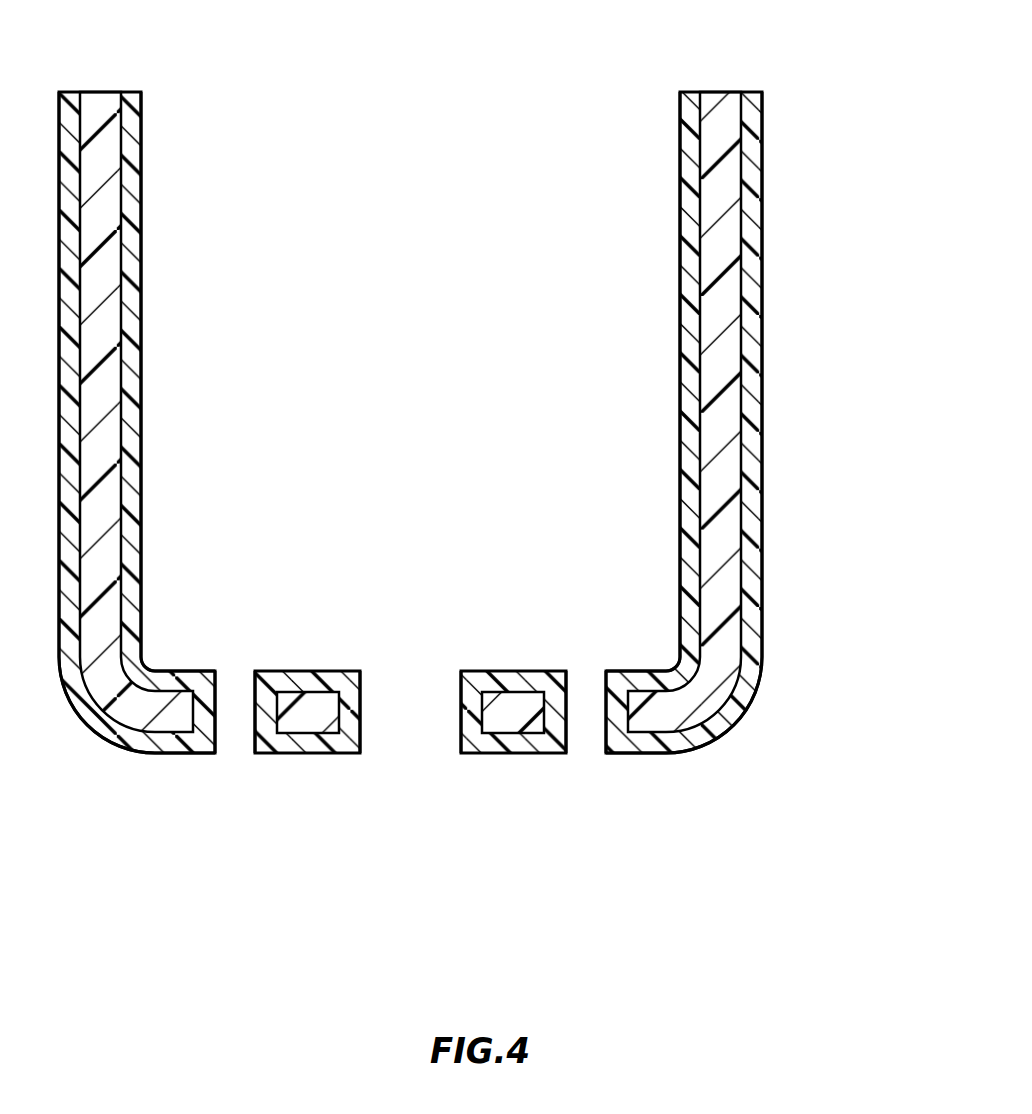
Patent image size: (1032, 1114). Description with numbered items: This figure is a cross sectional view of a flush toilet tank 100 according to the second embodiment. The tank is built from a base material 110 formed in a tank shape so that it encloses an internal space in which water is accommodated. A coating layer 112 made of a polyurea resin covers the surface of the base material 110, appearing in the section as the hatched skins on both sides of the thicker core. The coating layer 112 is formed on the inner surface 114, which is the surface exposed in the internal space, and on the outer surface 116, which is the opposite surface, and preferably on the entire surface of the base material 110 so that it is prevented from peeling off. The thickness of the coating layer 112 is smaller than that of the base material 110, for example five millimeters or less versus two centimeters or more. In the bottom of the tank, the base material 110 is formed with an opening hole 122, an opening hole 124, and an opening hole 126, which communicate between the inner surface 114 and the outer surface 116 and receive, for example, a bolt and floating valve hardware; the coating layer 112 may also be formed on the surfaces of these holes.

The flush toilet tank 100 is at (473, 483).
The base material 110 is at (718, 107).
The coating layer 112 is at (685, 258).
The inner surface 114 is at (651, 423).
The outer surface 116 is at (790, 423).
The opening hole 122 is at (235, 713).
The opening hole 124 is at (410, 713).
The opening hole 126 is at (585, 713).